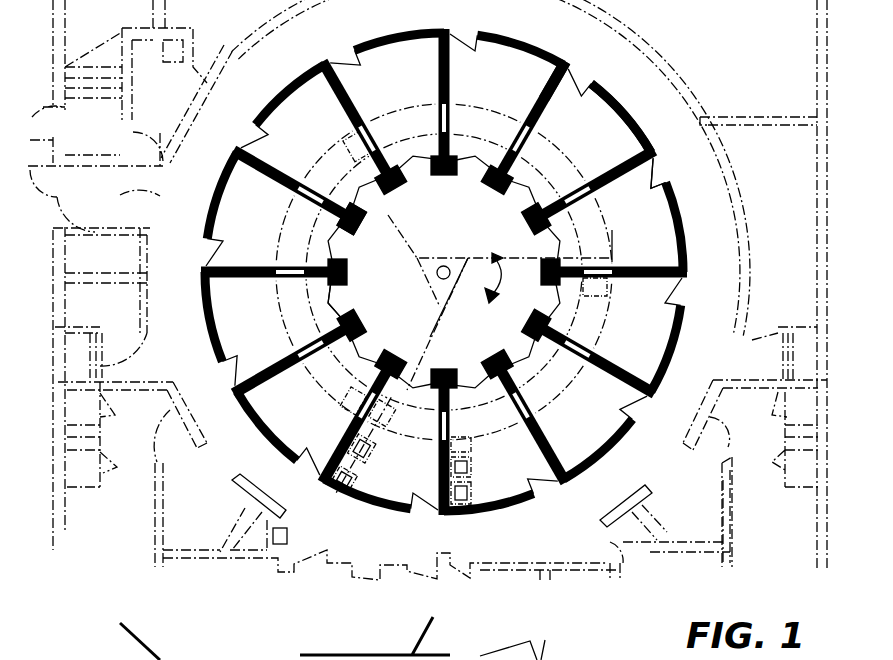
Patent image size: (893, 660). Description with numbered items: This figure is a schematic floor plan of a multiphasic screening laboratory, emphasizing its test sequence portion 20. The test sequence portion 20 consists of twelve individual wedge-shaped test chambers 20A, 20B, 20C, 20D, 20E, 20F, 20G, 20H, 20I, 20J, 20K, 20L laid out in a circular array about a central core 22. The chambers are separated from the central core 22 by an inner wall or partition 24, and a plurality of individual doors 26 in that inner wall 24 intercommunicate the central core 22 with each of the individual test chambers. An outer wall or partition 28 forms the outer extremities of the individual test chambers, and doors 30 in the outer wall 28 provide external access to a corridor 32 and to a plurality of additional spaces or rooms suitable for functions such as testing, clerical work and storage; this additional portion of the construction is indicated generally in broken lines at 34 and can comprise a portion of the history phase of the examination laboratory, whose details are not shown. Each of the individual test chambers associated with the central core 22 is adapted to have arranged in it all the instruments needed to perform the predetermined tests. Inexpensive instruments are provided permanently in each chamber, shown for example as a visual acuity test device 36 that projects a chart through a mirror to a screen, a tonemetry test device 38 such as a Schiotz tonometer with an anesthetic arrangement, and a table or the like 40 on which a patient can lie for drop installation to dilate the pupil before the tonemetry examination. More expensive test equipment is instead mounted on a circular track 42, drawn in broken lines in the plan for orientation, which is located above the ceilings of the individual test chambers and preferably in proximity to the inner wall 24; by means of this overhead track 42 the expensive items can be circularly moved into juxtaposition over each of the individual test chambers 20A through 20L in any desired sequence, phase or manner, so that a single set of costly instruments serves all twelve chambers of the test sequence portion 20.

The test sequence portion 20 is at (537, 42).
The test chamber 20A is at (483, 446).
The test chamber 20B is at (564, 403).
The test chamber 20C is at (614, 325).
The test chamber 20D is at (618, 233).
The test chamber 20E is at (575, 151).
The test chamber 20F is at (497, 102).
The test chamber 20G is at (405, 98).
The test chamber 20H is at (323, 141).
The test chamber 20I is at (274, 219).
The test chamber 20J is at (270, 311).
The test chamber 20K is at (313, 392).
The test chamber 20L is at (391, 442).
The central core 22 is at (500, 292).
The inner wall 24 is at (361, 230).
The doors 26 is at (352, 303).
The outer wall 28 is at (636, 135).
The doors 30 is at (652, 175).
The corridor 32 is at (697, 410).
The additional spaces portion 34 is at (697, 0).
The visual acuity test device 36 is at (380, 452).
The tonemetry test device 38 is at (368, 490).
The table 40 is at (392, 426).
The circular track 42 is at (613, 250).